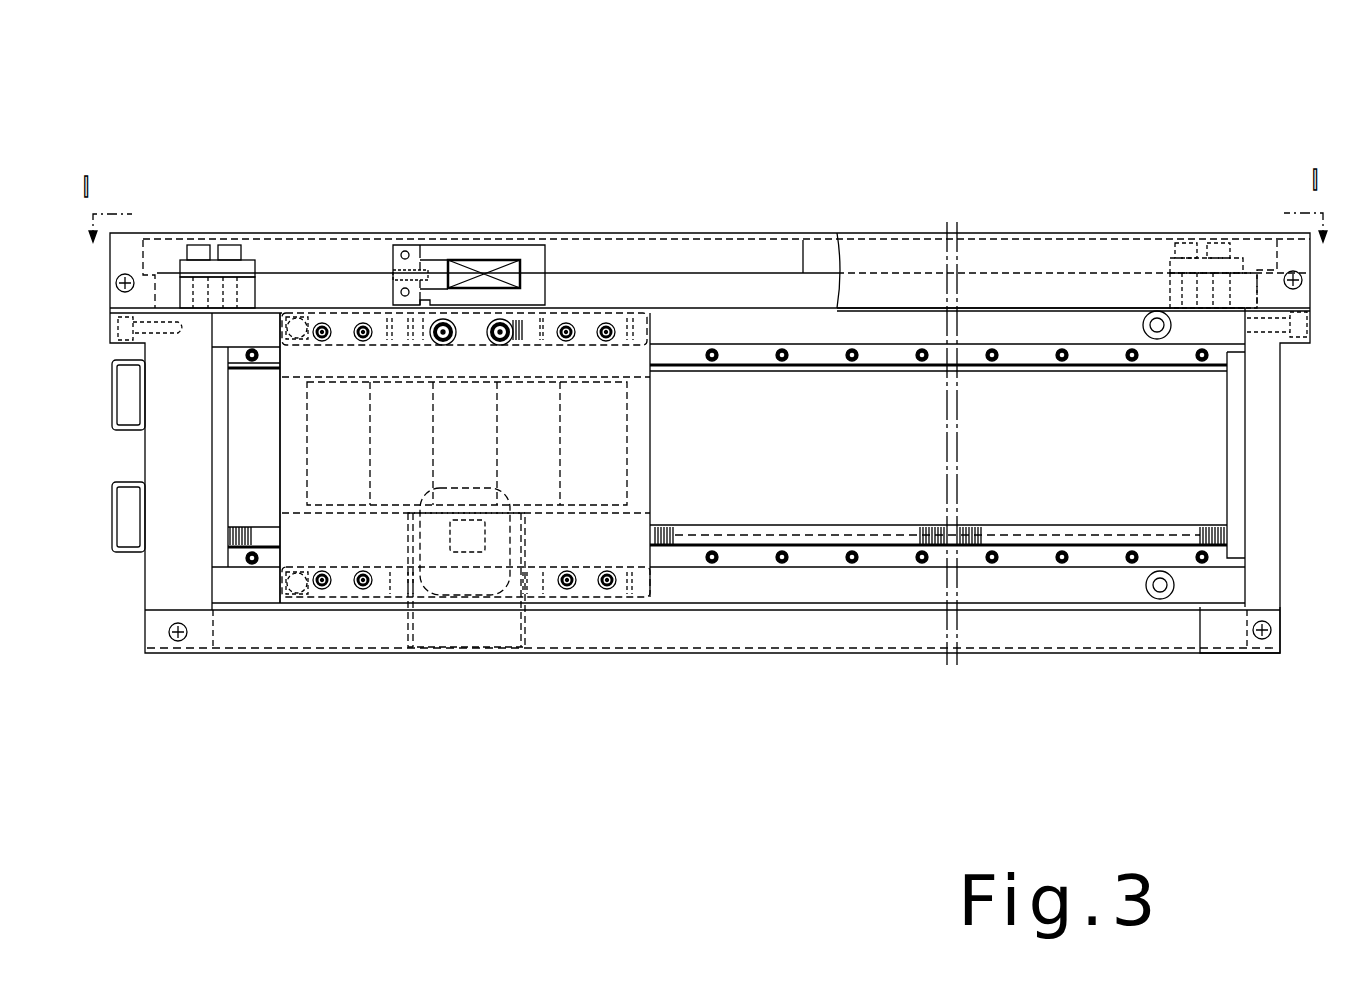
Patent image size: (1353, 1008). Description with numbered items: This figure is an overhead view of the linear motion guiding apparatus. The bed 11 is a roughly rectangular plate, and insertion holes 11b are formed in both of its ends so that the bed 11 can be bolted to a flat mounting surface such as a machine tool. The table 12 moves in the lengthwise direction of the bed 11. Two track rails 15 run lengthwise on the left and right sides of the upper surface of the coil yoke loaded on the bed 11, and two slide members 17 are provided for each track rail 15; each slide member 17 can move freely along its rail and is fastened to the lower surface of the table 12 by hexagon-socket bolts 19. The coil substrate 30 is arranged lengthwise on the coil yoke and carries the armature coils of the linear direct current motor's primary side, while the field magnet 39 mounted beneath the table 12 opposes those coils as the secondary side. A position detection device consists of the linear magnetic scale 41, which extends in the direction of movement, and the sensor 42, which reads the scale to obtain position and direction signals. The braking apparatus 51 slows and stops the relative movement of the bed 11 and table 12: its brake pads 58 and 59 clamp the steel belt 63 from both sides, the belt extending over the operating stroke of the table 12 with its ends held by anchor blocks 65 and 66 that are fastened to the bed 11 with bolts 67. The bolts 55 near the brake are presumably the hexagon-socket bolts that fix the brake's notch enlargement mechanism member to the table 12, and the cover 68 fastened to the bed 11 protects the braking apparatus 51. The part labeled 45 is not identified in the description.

The bed 11 is at (253, 593).
The insertion holes 11b is at (298, 316).
The table 12 is at (655, 395).
The track rails 15 is at (1013, 353).
The slide member 17 is at (331, 313).
The bolts with hexagon sockets 19 is at (363, 323).
The coil substrate 30 is at (973, 380).
The field magnet 39 is at (633, 452).
The linear magnetic scale 41 is at (807, 530).
The sensor 42 is at (457, 560).
The bed end portion 45 is at (1222, 633).
The braking apparatus 51 is at (509, 233).
The bracket fixing bolts 55 is at (500, 319).
The brake pad 58 is at (473, 233).
The brake pad 59 is at (417, 240).
The steel belt 63 is at (812, 233).
The anchor block 65 is at (257, 237).
The anchor block 66 is at (220, 237).
The bolts 67 is at (187, 237).
The cover 68 is at (903, 235).